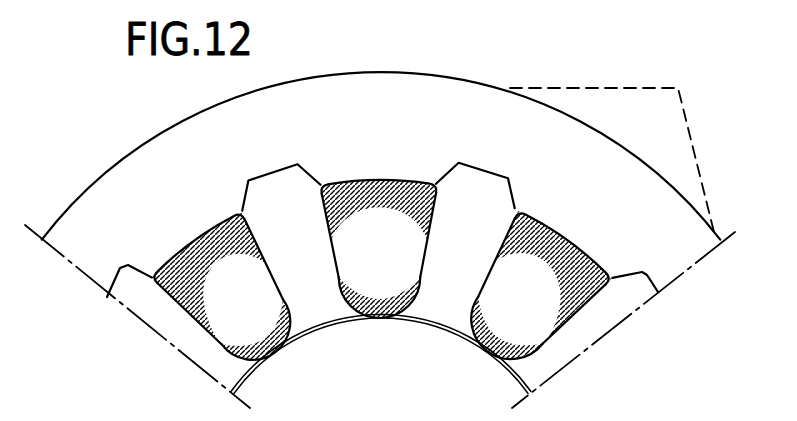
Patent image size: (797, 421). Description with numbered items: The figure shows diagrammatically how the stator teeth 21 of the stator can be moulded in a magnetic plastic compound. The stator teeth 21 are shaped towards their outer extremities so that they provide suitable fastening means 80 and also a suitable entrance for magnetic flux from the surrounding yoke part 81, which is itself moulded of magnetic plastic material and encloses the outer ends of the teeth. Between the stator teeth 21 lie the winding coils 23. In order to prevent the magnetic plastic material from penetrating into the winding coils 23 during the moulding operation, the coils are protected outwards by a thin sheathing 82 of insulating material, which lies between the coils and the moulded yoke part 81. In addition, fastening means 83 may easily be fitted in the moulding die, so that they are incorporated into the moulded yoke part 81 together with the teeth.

The stator teeth 21 is at (290, 208).
The winding coils 23 is at (375, 262).
The fastening means 80 is at (240, 197).
The yoke part 81 is at (373, 115).
The thin sheathing 82 is at (115, 298).
The fastening means 83 is at (660, 130).